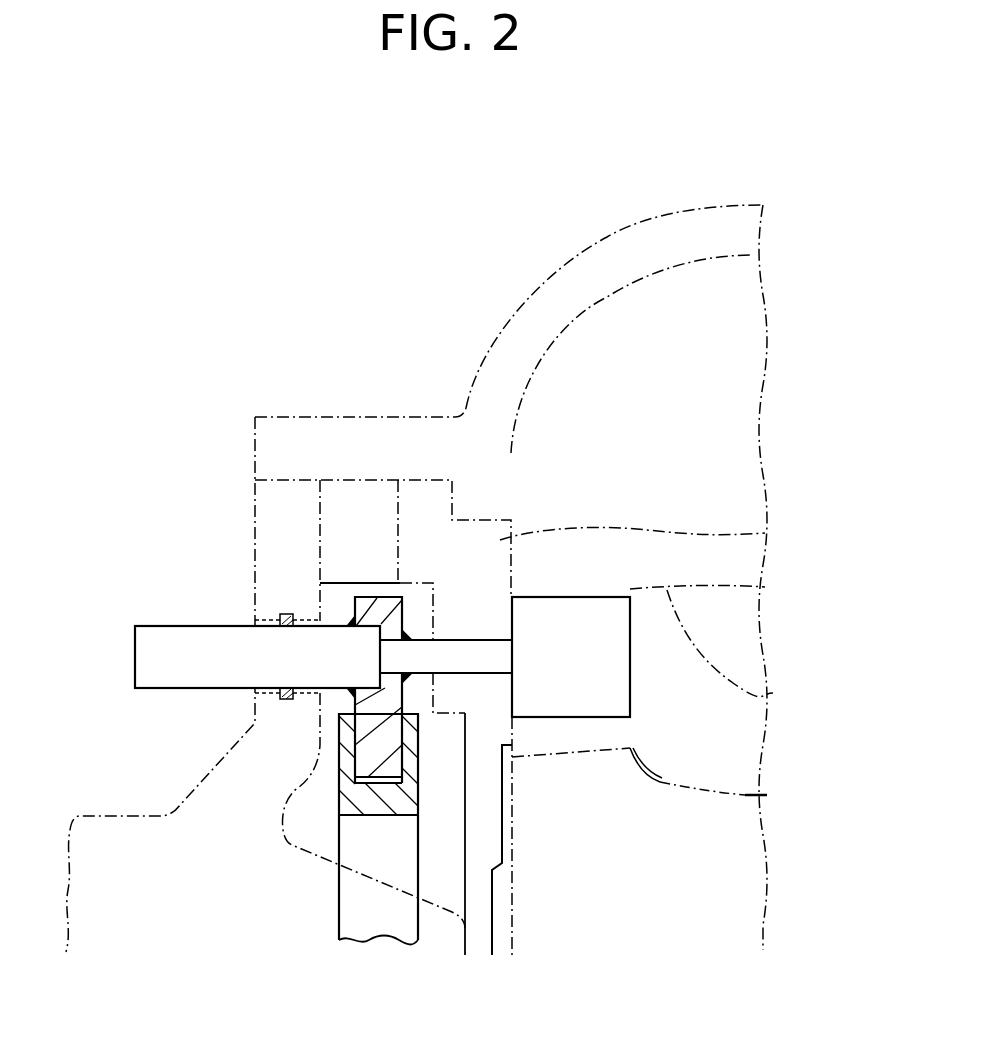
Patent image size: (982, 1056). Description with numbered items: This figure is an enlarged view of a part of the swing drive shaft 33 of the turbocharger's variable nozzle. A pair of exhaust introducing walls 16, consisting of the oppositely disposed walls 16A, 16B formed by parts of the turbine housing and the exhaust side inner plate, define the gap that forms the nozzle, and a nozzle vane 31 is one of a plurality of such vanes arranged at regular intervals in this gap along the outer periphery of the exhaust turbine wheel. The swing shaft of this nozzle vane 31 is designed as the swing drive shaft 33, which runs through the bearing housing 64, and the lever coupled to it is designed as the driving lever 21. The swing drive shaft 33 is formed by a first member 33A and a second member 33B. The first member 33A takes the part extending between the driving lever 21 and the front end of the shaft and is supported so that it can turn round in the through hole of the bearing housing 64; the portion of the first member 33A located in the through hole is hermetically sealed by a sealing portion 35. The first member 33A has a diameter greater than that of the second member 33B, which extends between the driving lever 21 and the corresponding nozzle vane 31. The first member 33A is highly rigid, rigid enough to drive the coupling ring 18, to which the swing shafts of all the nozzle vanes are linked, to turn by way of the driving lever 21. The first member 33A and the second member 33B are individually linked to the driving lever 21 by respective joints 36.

The exhaust introducing walls 16 is at (689, 607).
The exhaust introducing wall 16A is at (765, 587).
The exhaust introducing wall 16B is at (765, 533).
The coupling ring 18 is at (405, 783).
The driving lever 21 is at (378, 767).
The nozzle vane 31 is at (570, 702).
The swing drive shaft 33 is at (323, 499).
The first member 33A is at (330, 640).
The second member 33B is at (444, 650).
The sealing portion 35 is at (283, 613).
The joints 36 is at (318, 722).
The bearing housing 64 is at (258, 502).